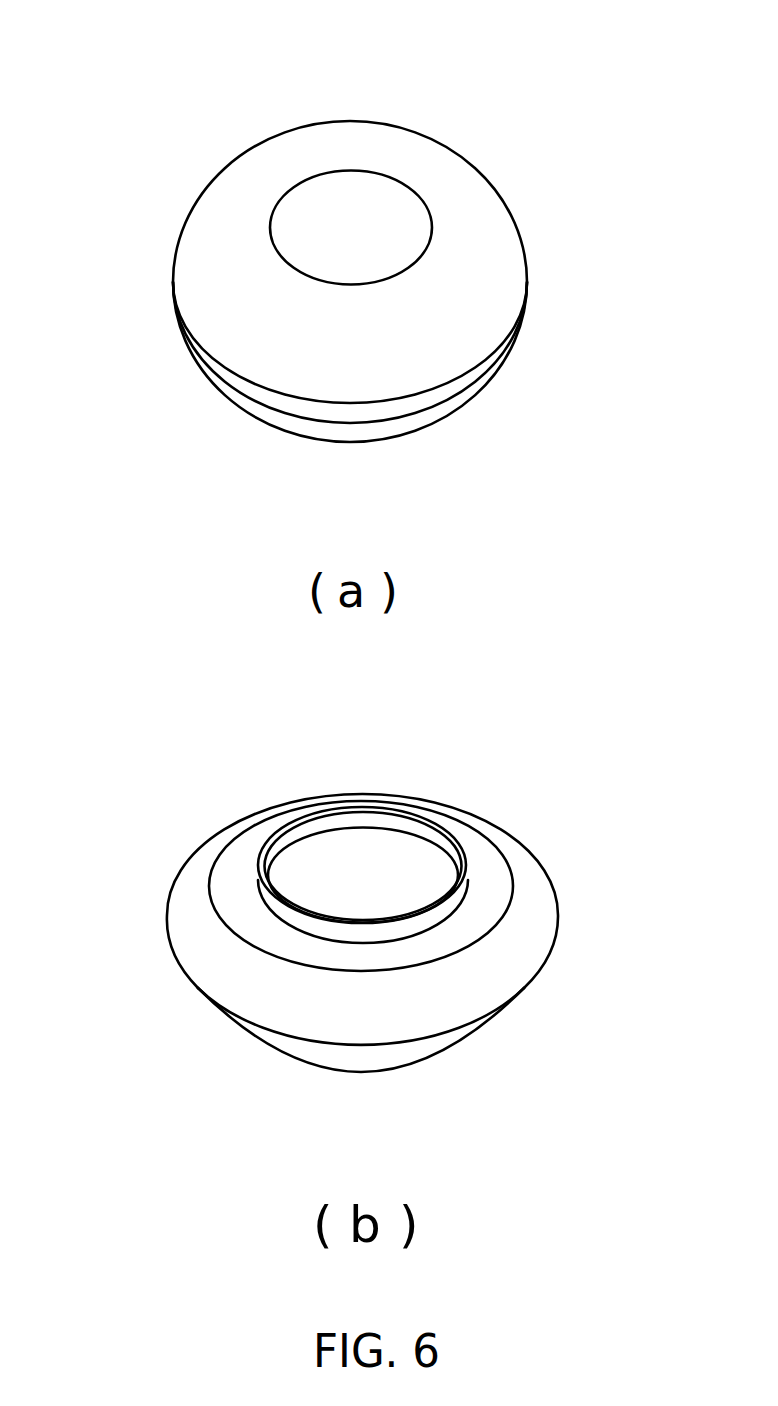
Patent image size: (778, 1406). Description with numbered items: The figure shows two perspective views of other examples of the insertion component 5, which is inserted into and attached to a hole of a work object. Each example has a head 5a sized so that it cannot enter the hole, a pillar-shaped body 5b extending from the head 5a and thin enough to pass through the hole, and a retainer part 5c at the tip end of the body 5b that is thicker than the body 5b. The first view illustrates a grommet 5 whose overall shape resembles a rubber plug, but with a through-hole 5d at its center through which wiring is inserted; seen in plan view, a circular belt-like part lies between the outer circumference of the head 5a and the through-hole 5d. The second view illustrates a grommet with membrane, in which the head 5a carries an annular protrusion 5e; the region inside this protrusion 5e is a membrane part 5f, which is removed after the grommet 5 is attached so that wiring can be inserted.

The insertion component 5 is at (193, 102).
The head 5a is at (503, 188).
The body 5b is at (512, 327).
The retainer part 5c is at (437, 407).
The through-hole 5d is at (342, 213).
The annular protrusion 5e is at (328, 807).
The membrane part 5f is at (370, 893).